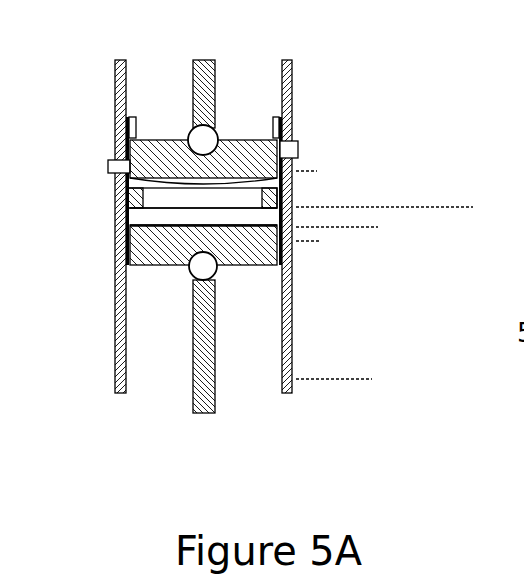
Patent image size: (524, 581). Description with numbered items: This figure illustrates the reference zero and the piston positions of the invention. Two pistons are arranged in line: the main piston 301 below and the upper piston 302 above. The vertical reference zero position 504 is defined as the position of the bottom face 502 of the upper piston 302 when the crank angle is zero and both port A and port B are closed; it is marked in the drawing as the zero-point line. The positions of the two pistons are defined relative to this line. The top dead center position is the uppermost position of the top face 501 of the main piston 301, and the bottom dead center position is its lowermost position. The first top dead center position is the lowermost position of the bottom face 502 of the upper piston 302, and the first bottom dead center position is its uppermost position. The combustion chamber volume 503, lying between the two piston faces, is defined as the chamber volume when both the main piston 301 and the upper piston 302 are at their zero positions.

The main piston 301 is at (258, 247).
The upper piston 302 is at (233, 147).
The top face of the main piston 501 is at (202, 228).
The bottom face of the upper piston 502 is at (172, 208).
The combustion chamber volume 503 is at (192, 197).
The vertical reference zero position 504 is at (500, 180).